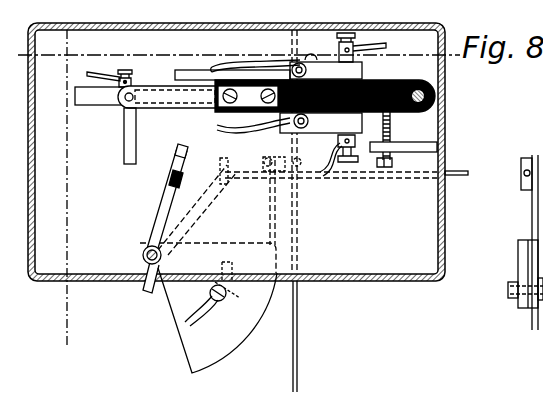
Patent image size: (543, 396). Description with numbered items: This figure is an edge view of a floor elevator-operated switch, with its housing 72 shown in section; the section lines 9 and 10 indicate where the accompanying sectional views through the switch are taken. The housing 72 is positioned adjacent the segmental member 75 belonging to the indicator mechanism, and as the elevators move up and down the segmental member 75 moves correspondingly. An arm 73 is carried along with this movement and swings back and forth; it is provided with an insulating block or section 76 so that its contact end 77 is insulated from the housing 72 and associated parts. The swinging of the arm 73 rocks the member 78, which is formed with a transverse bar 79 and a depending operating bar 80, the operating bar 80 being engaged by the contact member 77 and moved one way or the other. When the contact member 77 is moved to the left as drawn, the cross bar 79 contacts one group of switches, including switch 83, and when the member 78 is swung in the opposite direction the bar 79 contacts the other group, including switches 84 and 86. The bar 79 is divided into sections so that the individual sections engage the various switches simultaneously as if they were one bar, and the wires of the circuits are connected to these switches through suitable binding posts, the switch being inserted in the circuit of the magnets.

The section line 9— 9 is at (78, 306).
The section line 10— 10 is at (455, 57).
The housing 72 is at (395, 32).
The arm 73 is at (163, 215).
The segmental member 75 is at (224, 348).
The insulating block or section 76 is at (170, 182).
The contact end 77 is at (189, 150).
The member 78 is at (127, 111).
The transverse bar 79 is at (75, 97).
The depending operating bar 80 is at (126, 150).
The switch 83 is at (192, 118).
The switch 84 is at (542, 118).
The switch 86 is at (180, 71).